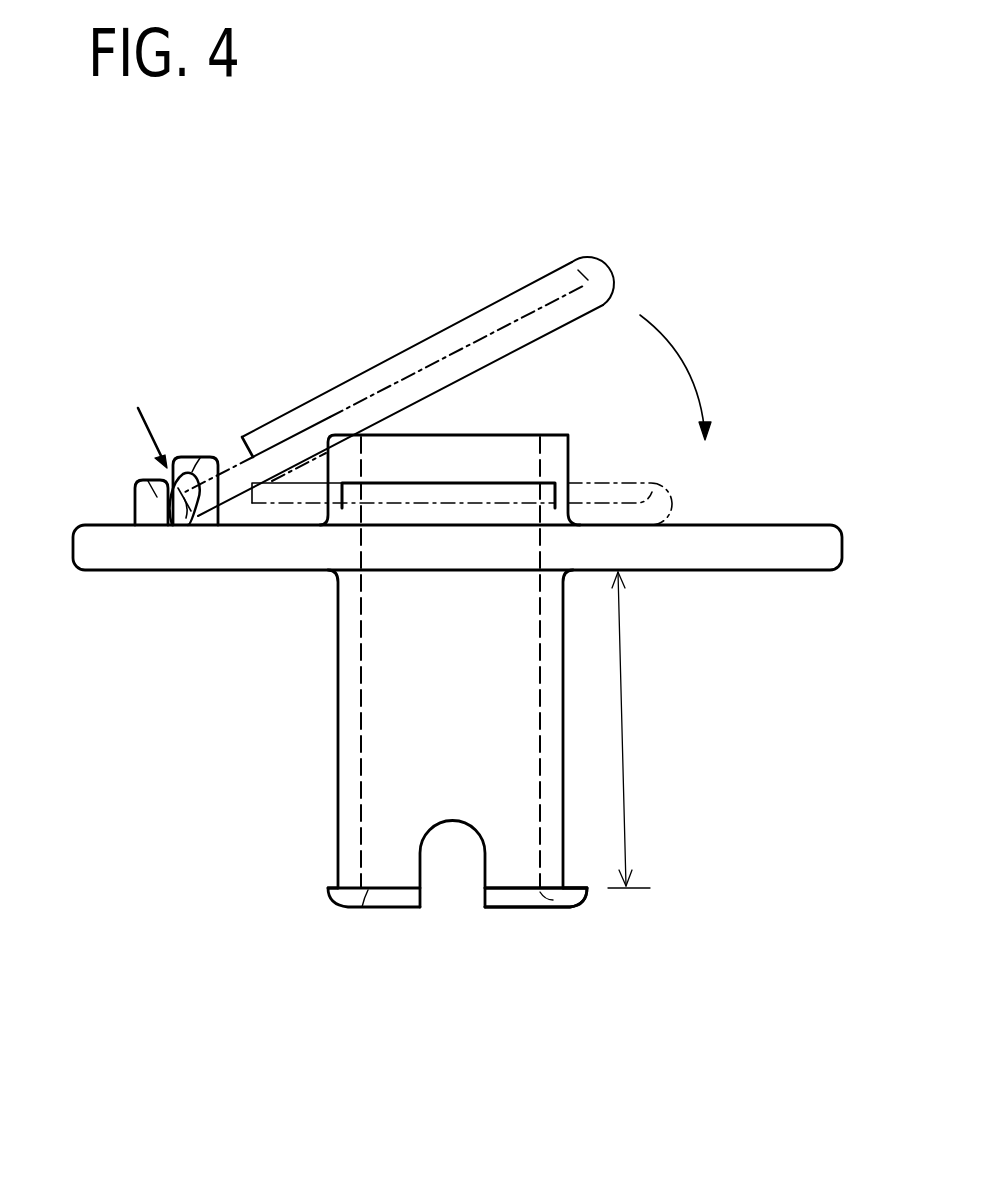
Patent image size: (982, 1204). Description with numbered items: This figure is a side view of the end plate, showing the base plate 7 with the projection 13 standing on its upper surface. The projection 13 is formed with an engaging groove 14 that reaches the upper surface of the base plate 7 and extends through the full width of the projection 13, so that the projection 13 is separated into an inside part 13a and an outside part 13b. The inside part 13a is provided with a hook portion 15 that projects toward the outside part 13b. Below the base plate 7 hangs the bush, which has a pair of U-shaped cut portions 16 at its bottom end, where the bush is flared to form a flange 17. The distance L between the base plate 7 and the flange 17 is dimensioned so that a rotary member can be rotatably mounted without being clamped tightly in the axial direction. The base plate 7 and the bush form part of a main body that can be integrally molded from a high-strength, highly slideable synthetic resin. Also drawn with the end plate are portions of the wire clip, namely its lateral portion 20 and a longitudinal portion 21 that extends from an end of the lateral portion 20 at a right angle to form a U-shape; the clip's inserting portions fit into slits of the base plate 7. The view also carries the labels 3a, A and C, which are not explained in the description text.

The lever 3a is at (572, 272).
The base plate 7 is at (772, 543).
The projection 13 is at (162, 313).
The inside part 13a is at (189, 470).
The outside part 13b is at (133, 476).
The engaging groove 14 is at (170, 505).
The hook portion 15 is at (166, 505).
The U-shaped cut portion 16 is at (481, 857).
The flange 17 is at (571, 901).
The lateral portion 20 is at (185, 505).
The longitudinal portion 21 is at (607, 527).
The insertion direction arrow A is at (140, 408).
The rotation direction arrow C is at (697, 385).
The distance L is at (621, 720).